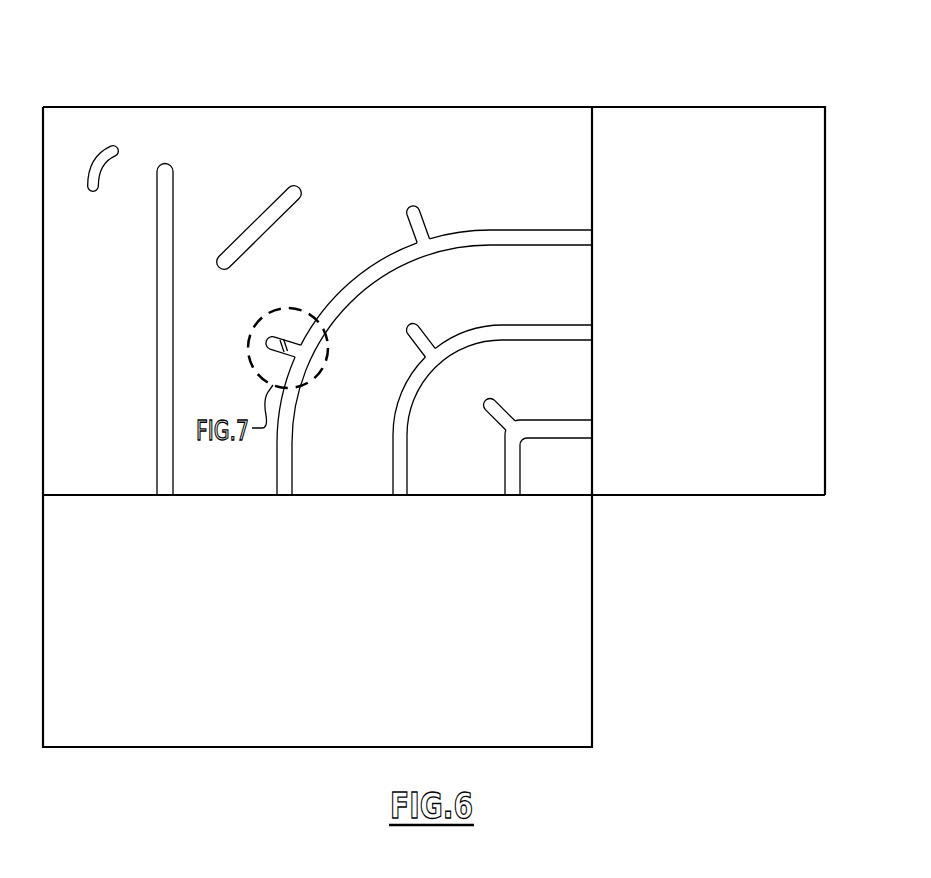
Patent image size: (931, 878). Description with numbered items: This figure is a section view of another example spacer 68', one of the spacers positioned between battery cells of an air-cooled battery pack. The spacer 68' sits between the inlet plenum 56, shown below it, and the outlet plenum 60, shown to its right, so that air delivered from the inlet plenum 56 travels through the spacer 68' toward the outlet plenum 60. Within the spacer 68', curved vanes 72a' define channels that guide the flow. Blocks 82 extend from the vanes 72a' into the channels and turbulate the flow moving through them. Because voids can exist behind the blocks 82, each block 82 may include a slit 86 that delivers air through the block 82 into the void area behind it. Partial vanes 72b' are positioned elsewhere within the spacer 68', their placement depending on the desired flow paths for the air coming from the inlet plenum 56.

The inlet plenum 56 is at (334, 638).
The outlet plenum 60 is at (728, 334).
The spacer 68' is at (341, 54).
The vanes 72a' is at (434, 350).
The partial vanes 72b' is at (242, 216).
The blocks 82 is at (283, 336).
The slits 86 is at (303, 355).